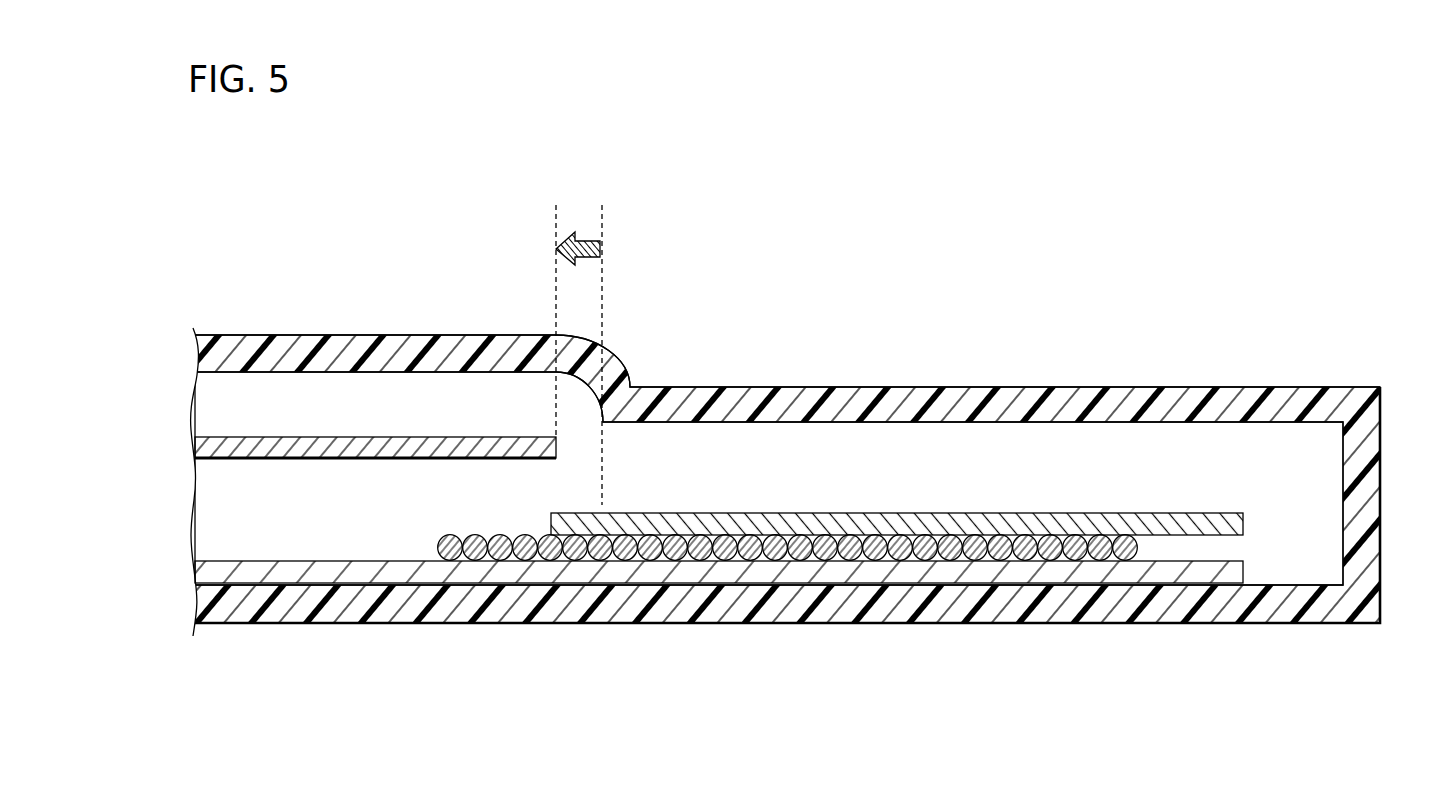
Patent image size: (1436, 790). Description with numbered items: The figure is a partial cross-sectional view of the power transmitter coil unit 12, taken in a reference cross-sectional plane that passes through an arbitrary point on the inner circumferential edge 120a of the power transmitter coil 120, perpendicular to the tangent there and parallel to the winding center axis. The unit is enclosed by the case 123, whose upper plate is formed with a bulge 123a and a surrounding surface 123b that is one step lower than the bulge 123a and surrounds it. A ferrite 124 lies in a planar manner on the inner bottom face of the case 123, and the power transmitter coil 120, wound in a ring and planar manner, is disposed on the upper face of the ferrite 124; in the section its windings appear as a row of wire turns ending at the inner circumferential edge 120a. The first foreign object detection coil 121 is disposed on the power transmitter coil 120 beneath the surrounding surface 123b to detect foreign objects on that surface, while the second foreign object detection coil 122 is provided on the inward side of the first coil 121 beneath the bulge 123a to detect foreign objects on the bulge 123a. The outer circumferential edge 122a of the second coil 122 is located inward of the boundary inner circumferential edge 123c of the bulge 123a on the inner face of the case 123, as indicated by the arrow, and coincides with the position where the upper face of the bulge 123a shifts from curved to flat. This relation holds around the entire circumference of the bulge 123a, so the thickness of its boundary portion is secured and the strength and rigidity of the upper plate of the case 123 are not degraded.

The power transmitter coil unit 12 is at (838, 288).
The power transmitter coil 120 is at (852, 558).
The inner circumferential edge 120a is at (440, 543).
The first foreign object detection coil 121 is at (968, 513).
The second foreign object detection coil 122 is at (447, 436).
The outer circumferential edge 122a is at (557, 449).
The case 123 is at (1313, 398).
The bulge 123a is at (319, 350).
The surrounding surface 123b is at (1055, 387).
The boundary inner circumferential edge 123c is at (604, 423).
The ferrite 124 is at (1175, 570).